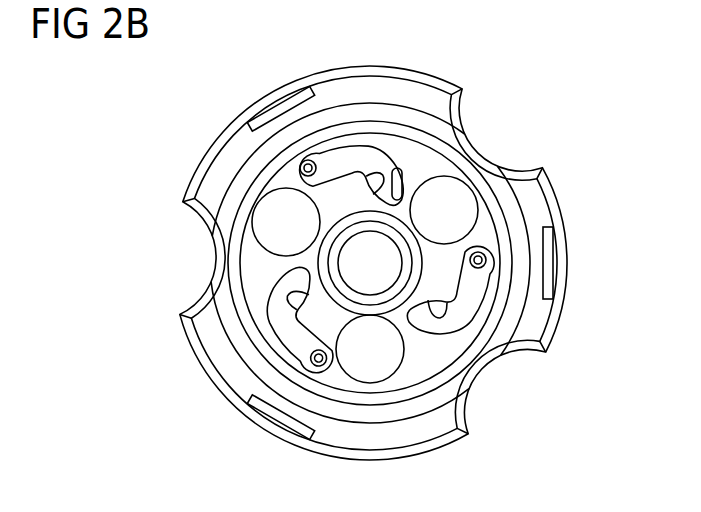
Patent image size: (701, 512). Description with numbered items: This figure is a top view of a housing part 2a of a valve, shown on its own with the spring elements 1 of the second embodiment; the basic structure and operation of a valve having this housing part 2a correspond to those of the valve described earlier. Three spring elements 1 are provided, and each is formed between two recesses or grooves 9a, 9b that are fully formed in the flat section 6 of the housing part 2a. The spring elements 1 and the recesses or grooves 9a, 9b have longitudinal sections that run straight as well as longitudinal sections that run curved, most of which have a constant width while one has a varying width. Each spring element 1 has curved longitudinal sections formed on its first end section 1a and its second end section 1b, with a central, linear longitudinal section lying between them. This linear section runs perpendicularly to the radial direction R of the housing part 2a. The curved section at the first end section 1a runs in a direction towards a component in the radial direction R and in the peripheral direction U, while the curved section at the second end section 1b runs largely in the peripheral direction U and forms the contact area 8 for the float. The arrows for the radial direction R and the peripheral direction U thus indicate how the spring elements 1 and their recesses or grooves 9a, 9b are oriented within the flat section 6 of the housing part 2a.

The housing part 2a is at (531, 72).
The spring element 1 is at (298, 128).
The first end section 1a is at (249, 119).
The contact area 8 is at (305, 163).
The second end section 1b is at (397, 188).
The flat section 6 is at (418, 170).
The recess or groove 9a is at (473, 313).
The recess or groove 9b is at (460, 284).
The peripheral direction U is at (150, 340).
The radial direction R is at (370, 263).